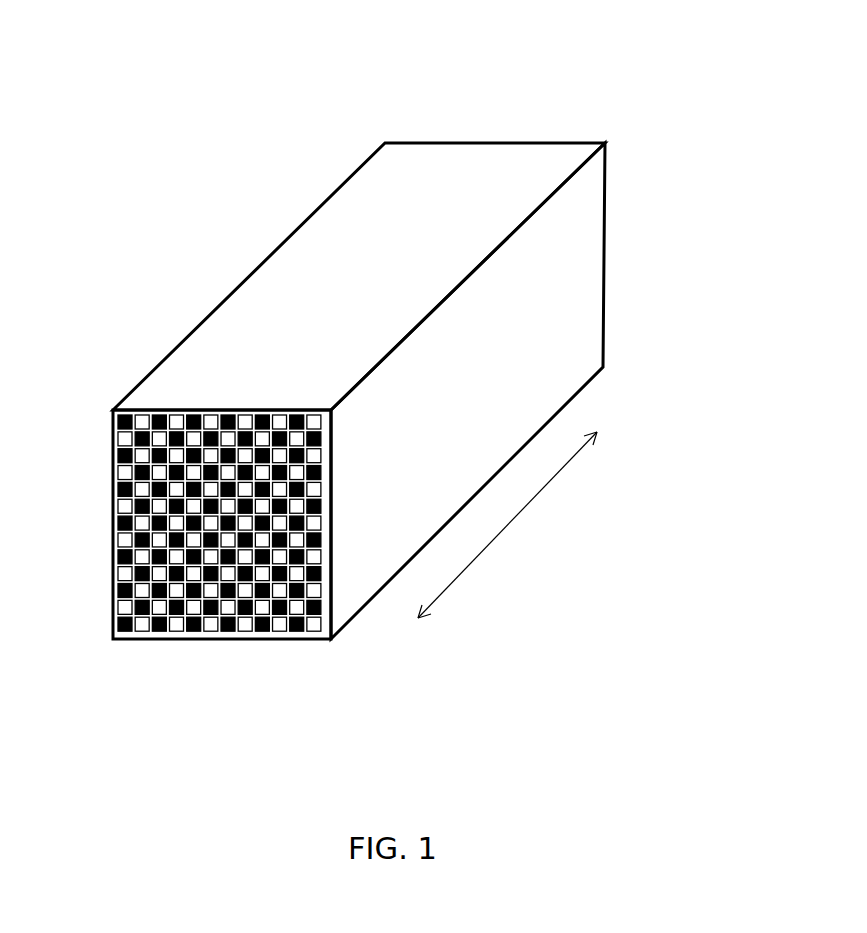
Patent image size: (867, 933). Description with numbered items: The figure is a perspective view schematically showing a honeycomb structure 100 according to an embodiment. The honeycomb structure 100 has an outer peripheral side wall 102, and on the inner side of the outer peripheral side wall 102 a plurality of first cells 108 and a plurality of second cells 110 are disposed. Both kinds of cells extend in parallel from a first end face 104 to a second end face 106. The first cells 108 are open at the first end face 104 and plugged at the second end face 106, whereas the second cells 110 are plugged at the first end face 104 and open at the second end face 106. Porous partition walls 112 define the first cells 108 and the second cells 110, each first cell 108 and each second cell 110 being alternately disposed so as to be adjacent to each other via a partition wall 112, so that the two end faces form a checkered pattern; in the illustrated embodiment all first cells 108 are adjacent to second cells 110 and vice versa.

The honeycomb structure 100 is at (407, 112).
The outer peripheral side wall 102 is at (585, 327).
The first end face 104 is at (113, 622).
The second end face 106 is at (484, 143).
The first cells 108 is at (113, 545).
The second cells 110 is at (113, 493).
The porous partition walls 112 is at (113, 451).